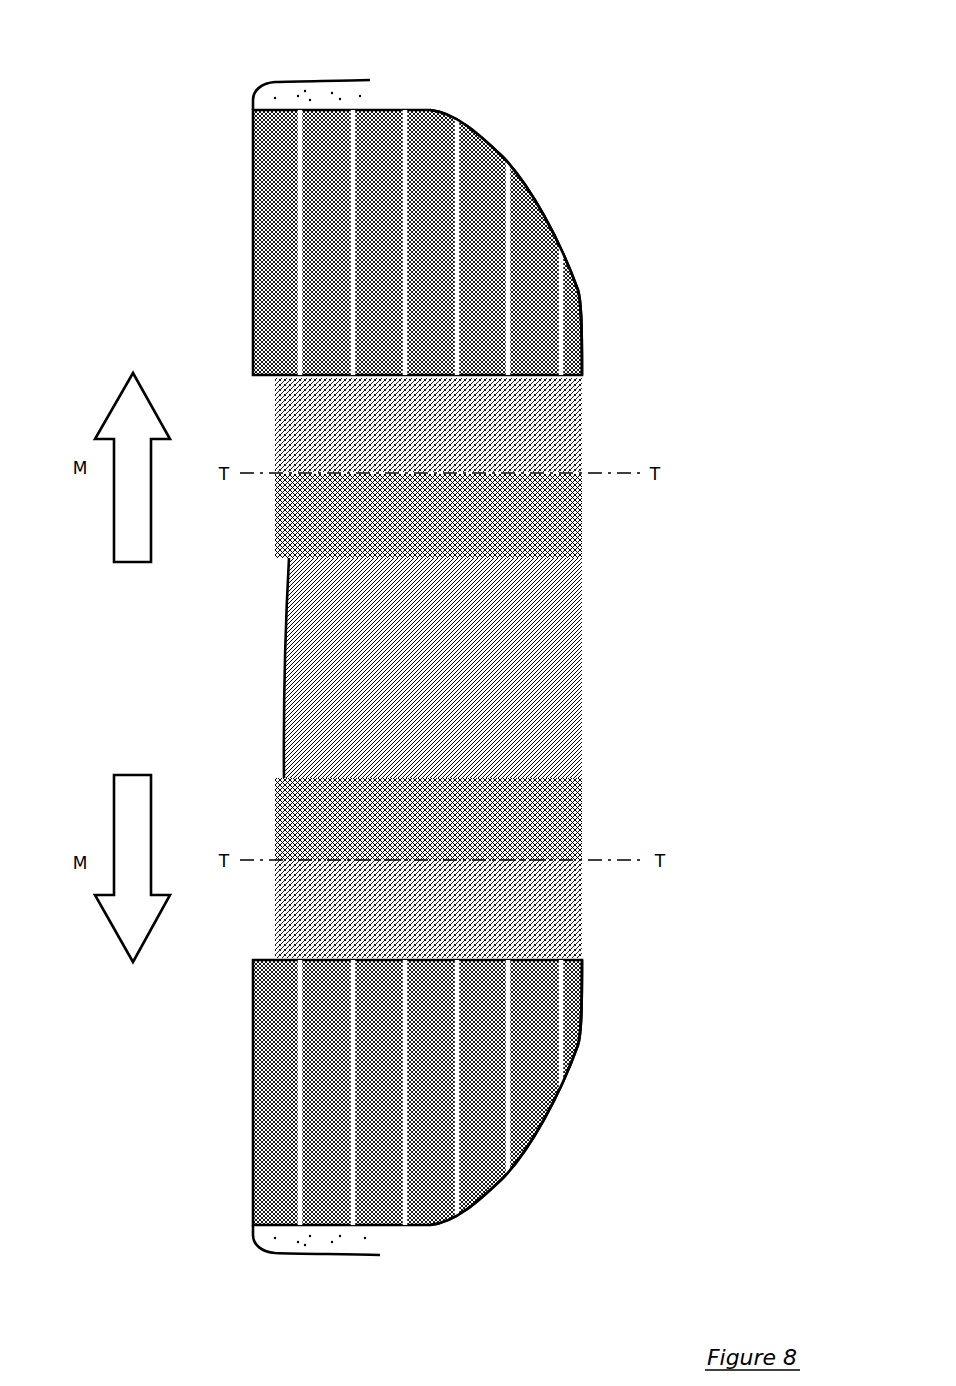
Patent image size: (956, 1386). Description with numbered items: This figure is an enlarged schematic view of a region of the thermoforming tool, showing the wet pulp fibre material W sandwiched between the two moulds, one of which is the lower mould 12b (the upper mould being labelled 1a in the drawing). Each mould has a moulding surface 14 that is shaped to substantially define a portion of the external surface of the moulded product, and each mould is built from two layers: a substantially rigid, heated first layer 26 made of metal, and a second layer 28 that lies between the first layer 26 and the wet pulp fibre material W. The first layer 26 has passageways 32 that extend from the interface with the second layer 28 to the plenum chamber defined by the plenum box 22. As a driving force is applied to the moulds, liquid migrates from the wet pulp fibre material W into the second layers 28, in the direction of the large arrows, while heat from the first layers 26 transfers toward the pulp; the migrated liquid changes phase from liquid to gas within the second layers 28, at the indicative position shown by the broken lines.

The first wheel assembly half 1a is at (628, 342).
The lower mould 12b is at (618, 1099).
The passageways 32 is at (300, 232).
The first layer 26 is at (545, 212).
The plenum box 22 is at (292, 82).
The second layer 28 is at (292, 430).
The moulding surface 14 is at (532, 568).
The wet pulp fibre material W is at (333, 693).